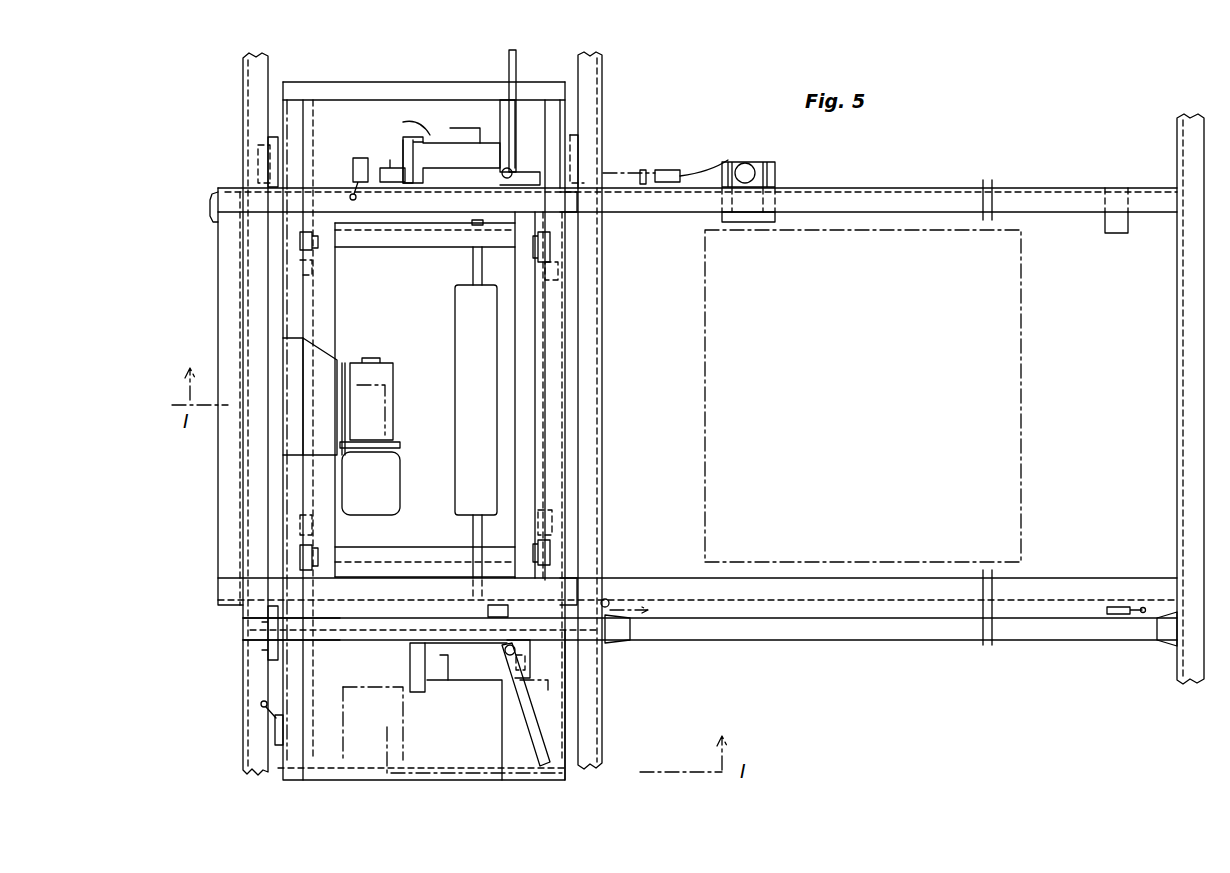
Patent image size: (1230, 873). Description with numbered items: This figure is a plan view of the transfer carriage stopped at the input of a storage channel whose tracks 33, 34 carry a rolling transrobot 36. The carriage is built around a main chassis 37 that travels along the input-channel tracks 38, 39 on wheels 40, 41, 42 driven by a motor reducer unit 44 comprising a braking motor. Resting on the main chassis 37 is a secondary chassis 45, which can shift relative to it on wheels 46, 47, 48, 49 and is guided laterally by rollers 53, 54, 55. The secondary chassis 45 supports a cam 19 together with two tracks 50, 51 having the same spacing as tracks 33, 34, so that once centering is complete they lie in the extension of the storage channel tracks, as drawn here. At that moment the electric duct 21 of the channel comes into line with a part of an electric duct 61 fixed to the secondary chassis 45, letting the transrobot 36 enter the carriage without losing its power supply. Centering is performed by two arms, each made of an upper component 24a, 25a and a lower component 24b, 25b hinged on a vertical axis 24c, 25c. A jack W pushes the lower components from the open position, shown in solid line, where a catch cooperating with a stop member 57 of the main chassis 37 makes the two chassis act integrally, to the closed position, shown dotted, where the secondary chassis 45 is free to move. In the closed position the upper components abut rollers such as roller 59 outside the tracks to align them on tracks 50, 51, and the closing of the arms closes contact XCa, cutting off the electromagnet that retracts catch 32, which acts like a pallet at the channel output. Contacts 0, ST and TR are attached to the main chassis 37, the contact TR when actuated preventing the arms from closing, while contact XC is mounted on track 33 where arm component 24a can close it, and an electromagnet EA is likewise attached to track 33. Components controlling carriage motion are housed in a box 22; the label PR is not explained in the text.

The track 38 is at (255, 80).
The track 39 is at (590, 84).
The main chassis 37 is at (347, 92).
The upper component of centering arm 24a is at (508, 58).
The lower component of centering arm 24b is at (453, 170).
The vertical axis 24c is at (509, 170).
The stop member 57 is at (405, 140).
The pressure sensor PR is at (356, 158).
The contact ST is at (389, 161).
The wheel 40 is at (260, 156).
The wheel 41 is at (578, 146).
The cam 19 is at (210, 210).
The track 33 is at (882, 192).
The catch 32 is at (1116, 222).
The transrobot 36 is at (1022, 425).
The wheel 47 is at (305, 242).
The track 50 is at (580, 210).
The wheel 46 is at (548, 240).
The roller 53 is at (560, 270).
The motor reducer unit 44 is at (388, 382).
The secondary chassis 45 is at (528, 440).
The jack W is at (460, 483).
The contact TR is at (497, 606).
The roller 54 is at (300, 528).
The wheel 48 is at (305, 556).
The roller 55 is at (550, 522).
The wheel 49 is at (552, 556).
The track 51 is at (585, 595).
The roller 59 is at (612, 600).
The wheel 42 is at (270, 648).
The contact 0 is at (272, 720).
The box 22 is at (352, 727).
The lower component of centering arm 25b is at (425, 664).
The vertical axis 25c is at (520, 662).
The upper component of centering arm 25a is at (540, 705).
The electric duct 61 is at (605, 652).
The electric duct 21 is at (810, 632).
The track 34 is at (935, 596).
The contact XCa is at (1120, 616).
The contact XC is at (668, 172).
The electromagnet EA is at (745, 170).